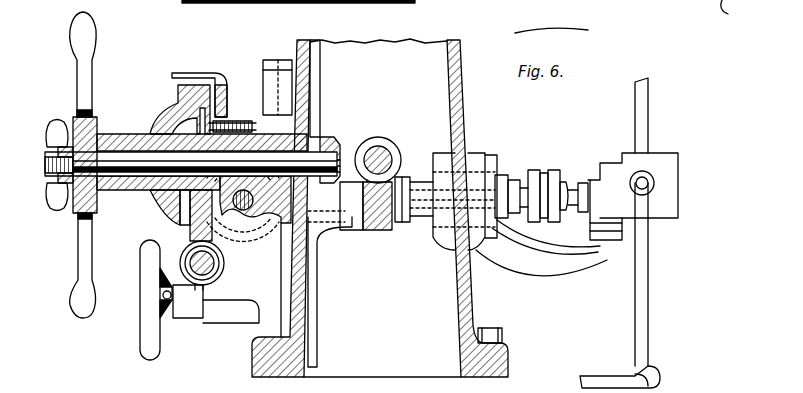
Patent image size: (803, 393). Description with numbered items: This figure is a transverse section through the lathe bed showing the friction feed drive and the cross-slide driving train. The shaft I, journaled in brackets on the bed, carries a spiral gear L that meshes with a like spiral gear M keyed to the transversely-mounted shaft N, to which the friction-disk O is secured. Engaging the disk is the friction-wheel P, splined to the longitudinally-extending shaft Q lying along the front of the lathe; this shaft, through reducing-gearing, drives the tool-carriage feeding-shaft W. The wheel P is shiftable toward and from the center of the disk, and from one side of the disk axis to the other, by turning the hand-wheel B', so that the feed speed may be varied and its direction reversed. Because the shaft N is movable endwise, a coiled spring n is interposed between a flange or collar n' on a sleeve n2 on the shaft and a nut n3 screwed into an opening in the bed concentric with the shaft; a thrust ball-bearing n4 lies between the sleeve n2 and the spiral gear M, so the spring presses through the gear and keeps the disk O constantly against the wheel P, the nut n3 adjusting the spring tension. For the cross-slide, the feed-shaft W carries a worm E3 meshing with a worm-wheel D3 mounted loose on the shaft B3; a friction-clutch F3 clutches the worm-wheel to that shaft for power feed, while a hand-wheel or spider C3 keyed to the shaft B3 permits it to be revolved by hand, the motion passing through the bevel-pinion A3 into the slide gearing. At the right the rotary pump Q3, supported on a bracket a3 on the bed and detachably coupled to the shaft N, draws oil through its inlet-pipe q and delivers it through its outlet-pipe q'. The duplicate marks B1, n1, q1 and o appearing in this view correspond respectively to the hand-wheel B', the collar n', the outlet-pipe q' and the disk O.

The bevel-pinion A3 is at (325, 137).
The shaft B3 is at (135, 196).
The hand-wheel B' is at (141, 300).
The hand wheel B1 is at (144, 289).
The hand-wheel or spider C3 is at (73, 120).
The worm-wheel D3 is at (203, 82).
The worm E3 is at (200, 318).
The friction-clutch F3 is at (163, 112).
The shaft I is at (380, 145).
The spiral gear L is at (368, 142).
The spiral gear M is at (357, 212).
The transversely-mounted shaft N is at (340, 255).
The friction-disk O is at (288, 87).
The rod o is at (306, 291).
The friction-wheel P is at (258, 243).
The longitudinally-extending shaft Q is at (240, 130).
The rotary pump Q3 is at (662, 220).
The tool-carriage feeding-shaft W is at (188, 256).
The bracket a3 is at (541, 260).
The coiled spring n is at (452, 222).
The flange or collar n' is at (409, 169).
The bushing n1 is at (420, 170).
The sleeve n2 is at (440, 165).
The nut n3 is at (504, 173).
The thrust ball-bearing n4 is at (400, 224).
The inlet-pipe q is at (625, 303).
The outlet-pipe q' is at (654, 148).
The lever arm q1 is at (650, 122).